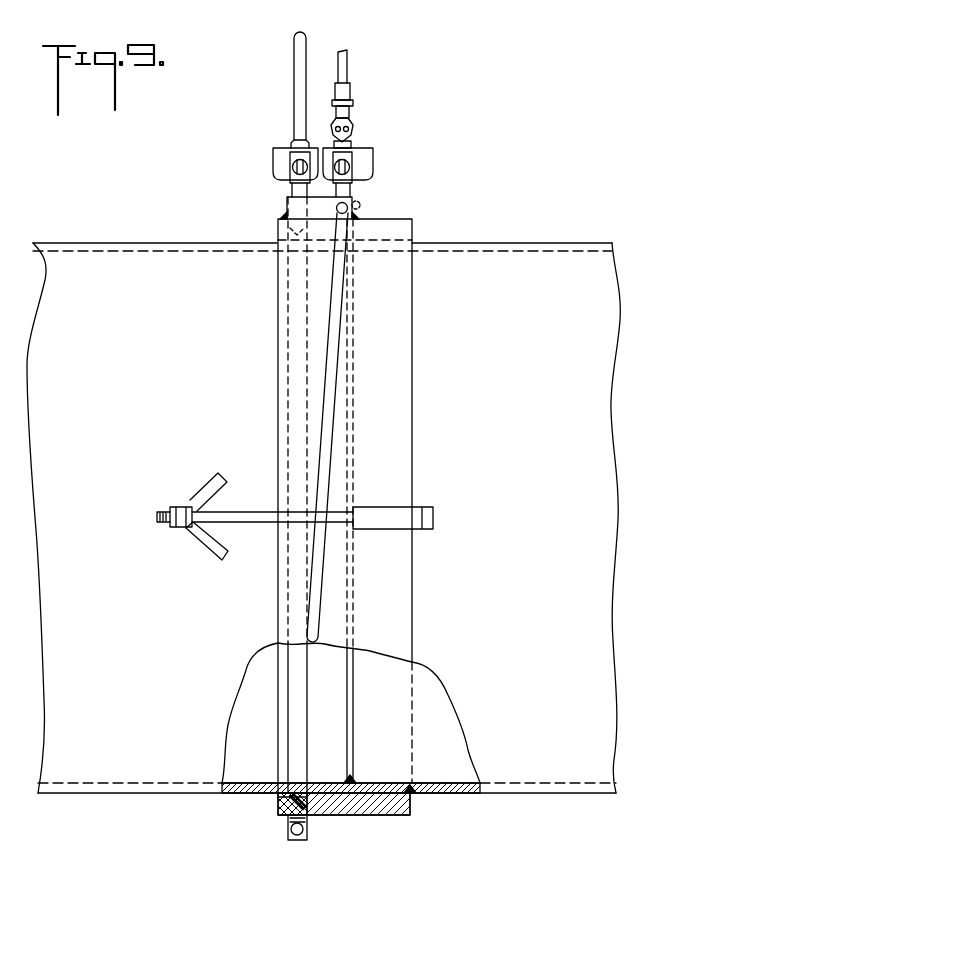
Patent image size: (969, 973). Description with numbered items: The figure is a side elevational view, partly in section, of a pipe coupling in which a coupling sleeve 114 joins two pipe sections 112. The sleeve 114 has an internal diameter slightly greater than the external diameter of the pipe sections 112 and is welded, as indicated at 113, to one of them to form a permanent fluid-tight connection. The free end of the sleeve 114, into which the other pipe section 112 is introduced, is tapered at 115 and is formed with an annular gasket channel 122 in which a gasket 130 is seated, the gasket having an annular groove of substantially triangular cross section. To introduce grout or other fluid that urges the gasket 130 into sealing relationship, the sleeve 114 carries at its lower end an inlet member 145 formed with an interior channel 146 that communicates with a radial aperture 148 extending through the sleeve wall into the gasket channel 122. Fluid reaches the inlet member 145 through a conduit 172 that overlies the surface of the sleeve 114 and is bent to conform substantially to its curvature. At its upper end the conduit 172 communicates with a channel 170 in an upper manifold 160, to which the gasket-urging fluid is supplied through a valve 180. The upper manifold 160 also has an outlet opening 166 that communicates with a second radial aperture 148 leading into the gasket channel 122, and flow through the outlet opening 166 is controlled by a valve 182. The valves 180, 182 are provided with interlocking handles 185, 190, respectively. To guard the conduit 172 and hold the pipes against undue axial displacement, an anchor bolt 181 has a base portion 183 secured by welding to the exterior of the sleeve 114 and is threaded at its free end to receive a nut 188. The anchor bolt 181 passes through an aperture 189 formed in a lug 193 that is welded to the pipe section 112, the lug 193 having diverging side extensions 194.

The pipe sections 112 is at (75, 243).
The weld 113 is at (410, 790).
The coupling sleeve 114 is at (412, 230).
The tapered free end 115 is at (282, 797).
The gasket channel 122 is at (298, 792).
The gasket 130 is at (313, 798).
The inlet member 145 is at (304, 834).
The interior channel 146 is at (290, 826).
The radial aperture 148 is at (278, 226).
The upper manifold 160 is at (348, 208).
The outlet opening 166 is at (286, 206).
The channel 170 is at (358, 202).
The conduit 172 is at (330, 420).
The valve 180 is at (368, 150).
The anchor bolt 181 is at (252, 524).
The valve 182 is at (292, 167).
The base portion 183 is at (388, 510).
The handle 185 is at (362, 170).
The nut 188 is at (170, 510).
The aperture 189 is at (193, 498).
The handle 190 is at (280, 151).
The lug 193 is at (186, 530).
The diverging side extensions 194 is at (210, 562).